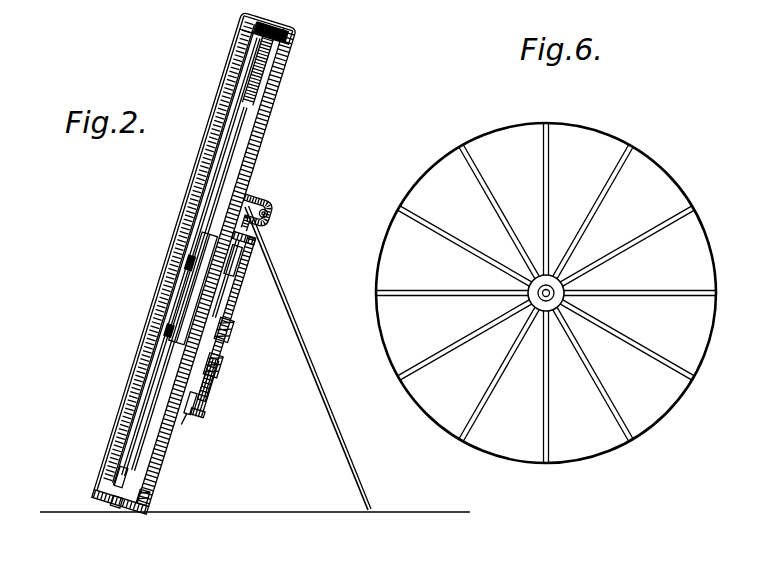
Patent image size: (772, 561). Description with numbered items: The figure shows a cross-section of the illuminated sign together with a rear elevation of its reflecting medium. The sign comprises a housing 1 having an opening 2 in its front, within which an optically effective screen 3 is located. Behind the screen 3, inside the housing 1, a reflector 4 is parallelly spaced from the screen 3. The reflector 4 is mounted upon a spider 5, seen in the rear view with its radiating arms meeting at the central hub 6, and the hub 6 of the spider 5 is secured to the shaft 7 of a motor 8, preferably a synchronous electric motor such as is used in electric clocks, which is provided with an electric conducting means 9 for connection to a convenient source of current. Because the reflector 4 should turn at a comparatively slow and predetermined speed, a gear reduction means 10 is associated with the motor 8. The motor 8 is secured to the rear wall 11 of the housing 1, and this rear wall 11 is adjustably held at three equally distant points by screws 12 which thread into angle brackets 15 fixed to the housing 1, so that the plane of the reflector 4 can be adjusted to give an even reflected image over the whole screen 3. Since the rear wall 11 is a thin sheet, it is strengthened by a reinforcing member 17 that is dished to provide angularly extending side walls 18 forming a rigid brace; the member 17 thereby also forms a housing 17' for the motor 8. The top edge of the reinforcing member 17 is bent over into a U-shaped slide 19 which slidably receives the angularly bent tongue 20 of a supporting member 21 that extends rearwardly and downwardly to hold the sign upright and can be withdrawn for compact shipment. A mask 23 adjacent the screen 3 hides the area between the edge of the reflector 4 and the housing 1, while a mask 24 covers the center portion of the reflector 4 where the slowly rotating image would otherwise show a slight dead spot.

In FIG. 2, the housing 1 is at (264, 14).
In FIG. 2, the opening 2 is at (128, 388).
In FIG. 2, the screen 3 is at (120, 418).
In FIG. 2, the reflector 4 is at (165, 315).
In FIG. 6, the reflector 4 is at (593, 450).
In FIG. 2, the spider 5 is at (240, 133).
In FIG. 6, the spider 5 is at (690, 283).
In FIG. 2, the hub / rod 6 is at (207, 245).
In FIG. 6, the hub / rod 6 is at (528, 284).
In FIG. 2, the shaft 7 is at (200, 296).
In FIG. 2, the motor 8 is at (218, 338).
In FIG. 2, the electric conducting means 9 is at (203, 397).
In FIG. 2, the gear reduction means 10 is at (232, 272).
In FIG. 2, the rear wall 11 is at (278, 82).
In FIG. 2, the screws 12 is at (146, 500).
In FIG. 2, the angle brackets 15 is at (113, 506).
In FIG. 2, the reinforcing member 17 is at (219, 298).
In FIG. 2, the housing for the source of power 17' is at (217, 354).
In FIG. 2, the side walls 18 is at (190, 410).
In FIG. 2, the U-shaped slide 19 is at (264, 214).
In FIG. 2, the tongue 20 is at (249, 212).
In FIG. 2, the supporting member 21 is at (316, 370).
In FIG. 2, the mask 23 is at (105, 463).
In FIG. 2, the mask 24 is at (184, 220).